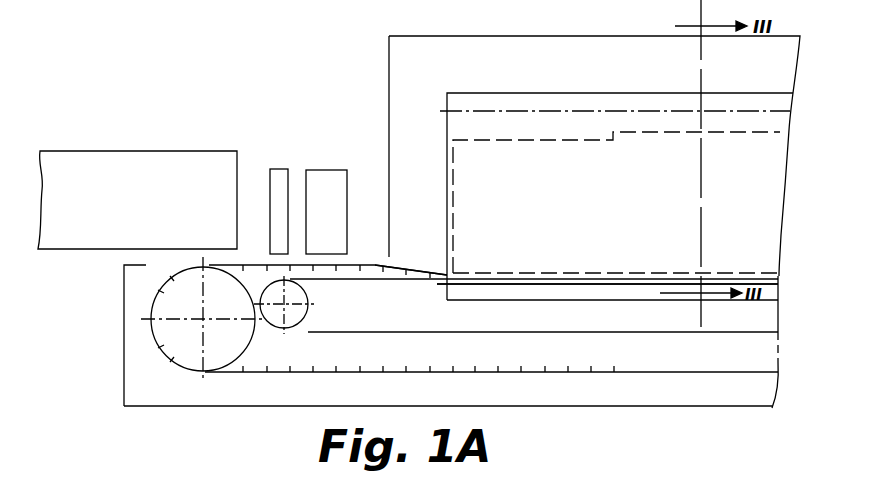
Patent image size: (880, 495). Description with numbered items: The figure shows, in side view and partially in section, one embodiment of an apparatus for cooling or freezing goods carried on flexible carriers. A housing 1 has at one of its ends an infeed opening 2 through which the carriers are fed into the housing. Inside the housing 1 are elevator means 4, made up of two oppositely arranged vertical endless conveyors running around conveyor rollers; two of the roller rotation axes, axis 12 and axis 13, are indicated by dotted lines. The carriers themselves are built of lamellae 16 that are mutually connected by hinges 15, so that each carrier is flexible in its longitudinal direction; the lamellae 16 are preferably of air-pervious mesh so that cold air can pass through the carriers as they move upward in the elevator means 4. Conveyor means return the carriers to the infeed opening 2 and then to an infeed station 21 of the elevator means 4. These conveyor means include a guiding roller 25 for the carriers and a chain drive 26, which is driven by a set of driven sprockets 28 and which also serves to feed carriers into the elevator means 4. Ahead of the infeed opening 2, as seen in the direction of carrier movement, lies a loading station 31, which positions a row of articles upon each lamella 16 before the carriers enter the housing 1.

The housing 1 is at (510, 20).
The infeed opening 2 is at (384, 258).
The elevator means 4 is at (512, 82).
The axis 12 is at (566, 111).
The axis 13 is at (598, 287).
The hinges 15 is at (455, 369).
The lamellae 16 is at (347, 372).
The infeed station 21 is at (431, 262).
The guiding roller 25 is at (172, 358).
The chain drive 26 is at (397, 322).
The driven sprockets 28 is at (308, 301).
The loading station 31 is at (281, 168).